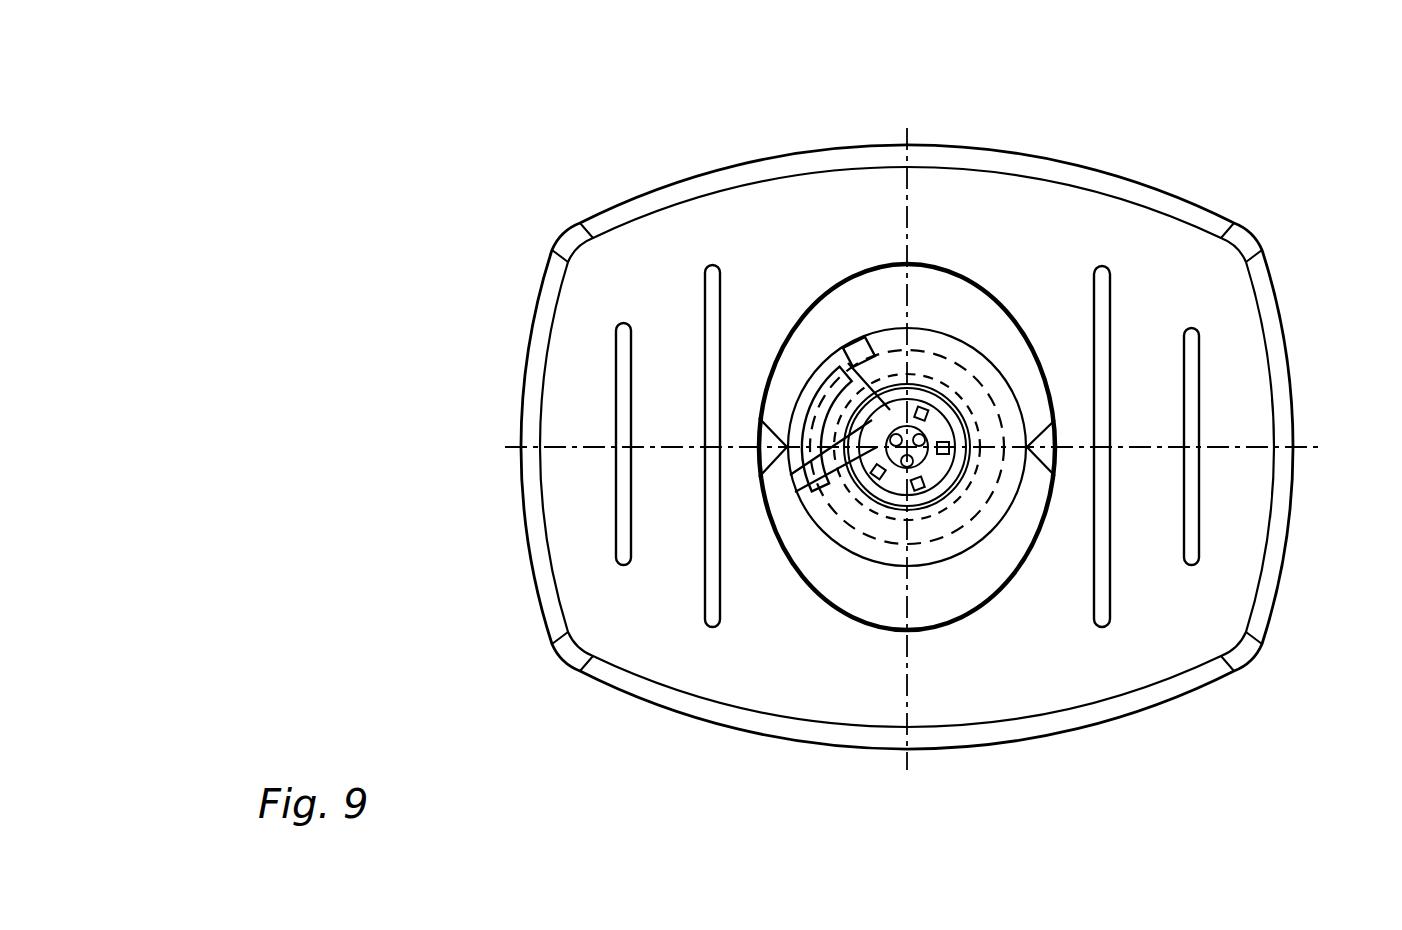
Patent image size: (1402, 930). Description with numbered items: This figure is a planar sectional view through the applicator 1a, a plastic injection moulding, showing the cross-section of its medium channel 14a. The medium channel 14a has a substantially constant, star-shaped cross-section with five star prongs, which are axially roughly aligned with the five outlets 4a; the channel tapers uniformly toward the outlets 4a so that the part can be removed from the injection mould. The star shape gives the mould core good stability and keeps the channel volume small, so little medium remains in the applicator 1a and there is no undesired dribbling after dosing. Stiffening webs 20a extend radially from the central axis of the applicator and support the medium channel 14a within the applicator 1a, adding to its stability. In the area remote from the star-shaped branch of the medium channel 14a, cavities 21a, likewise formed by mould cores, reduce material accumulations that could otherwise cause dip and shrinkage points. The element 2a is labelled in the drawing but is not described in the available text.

The applicator 1a is at (1212, 189).
The rib 2a is at (1193, 350).
The outlets 4a is at (942, 440).
The medium channel 14a is at (868, 440).
The stiffening webs 20a is at (863, 361).
The cavities 21a is at (845, 393).